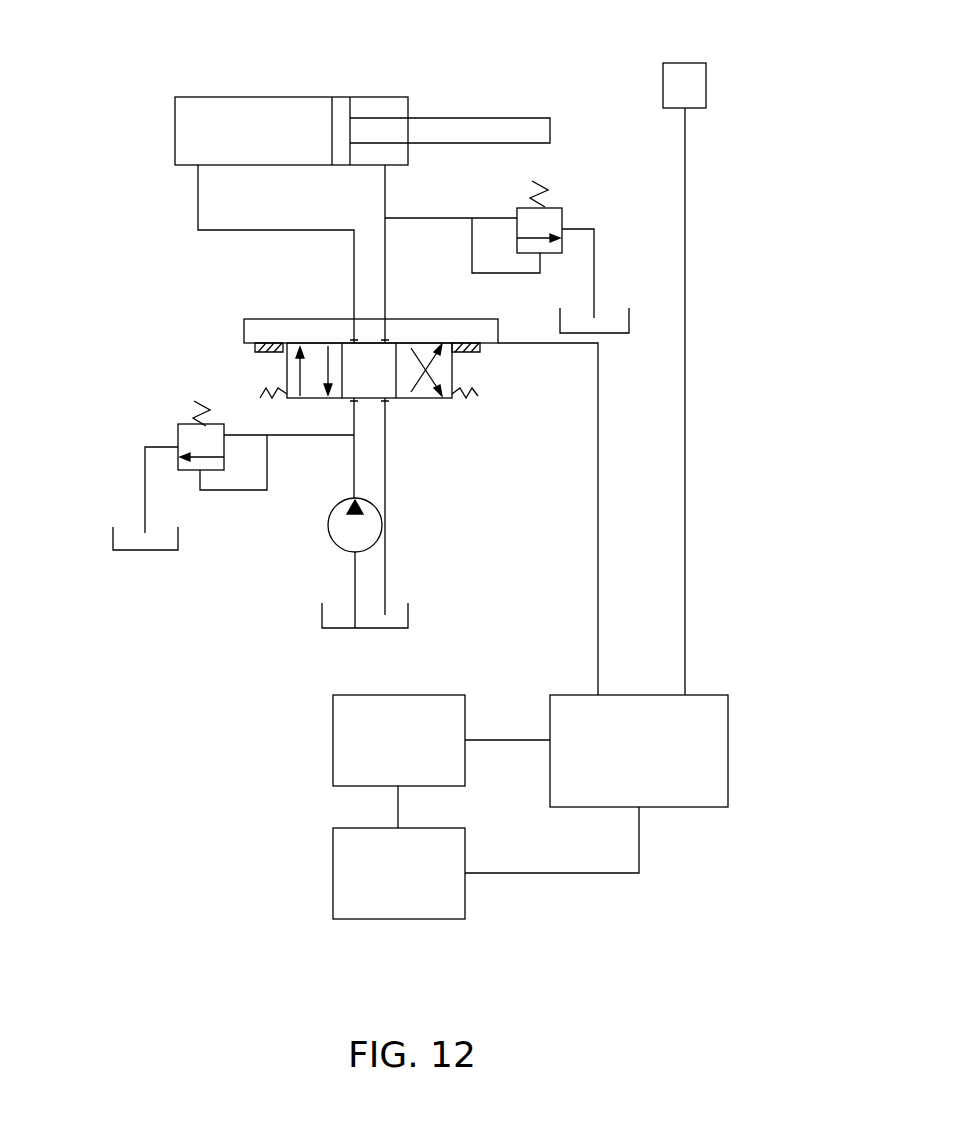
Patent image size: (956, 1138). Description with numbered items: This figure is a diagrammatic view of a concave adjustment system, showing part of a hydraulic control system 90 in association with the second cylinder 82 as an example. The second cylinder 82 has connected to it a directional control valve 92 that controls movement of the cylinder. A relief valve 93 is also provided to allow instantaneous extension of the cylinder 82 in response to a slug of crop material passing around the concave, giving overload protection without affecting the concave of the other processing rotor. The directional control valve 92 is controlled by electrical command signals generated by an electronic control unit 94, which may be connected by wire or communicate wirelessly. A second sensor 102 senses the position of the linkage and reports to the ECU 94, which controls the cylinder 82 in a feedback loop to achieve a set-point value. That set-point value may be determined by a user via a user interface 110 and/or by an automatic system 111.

The hydraulic control system 90 is at (106, 58).
The second cylinder 82 is at (300, 97).
The relief valve 93 is at (562, 218).
The directional control valve 92 is at (425, 398).
The second sensor 102 is at (706, 82).
The electronic control unit 94 is at (728, 730).
The user interface 110 is at (333, 755).
The automatic system 111 is at (398, 919).